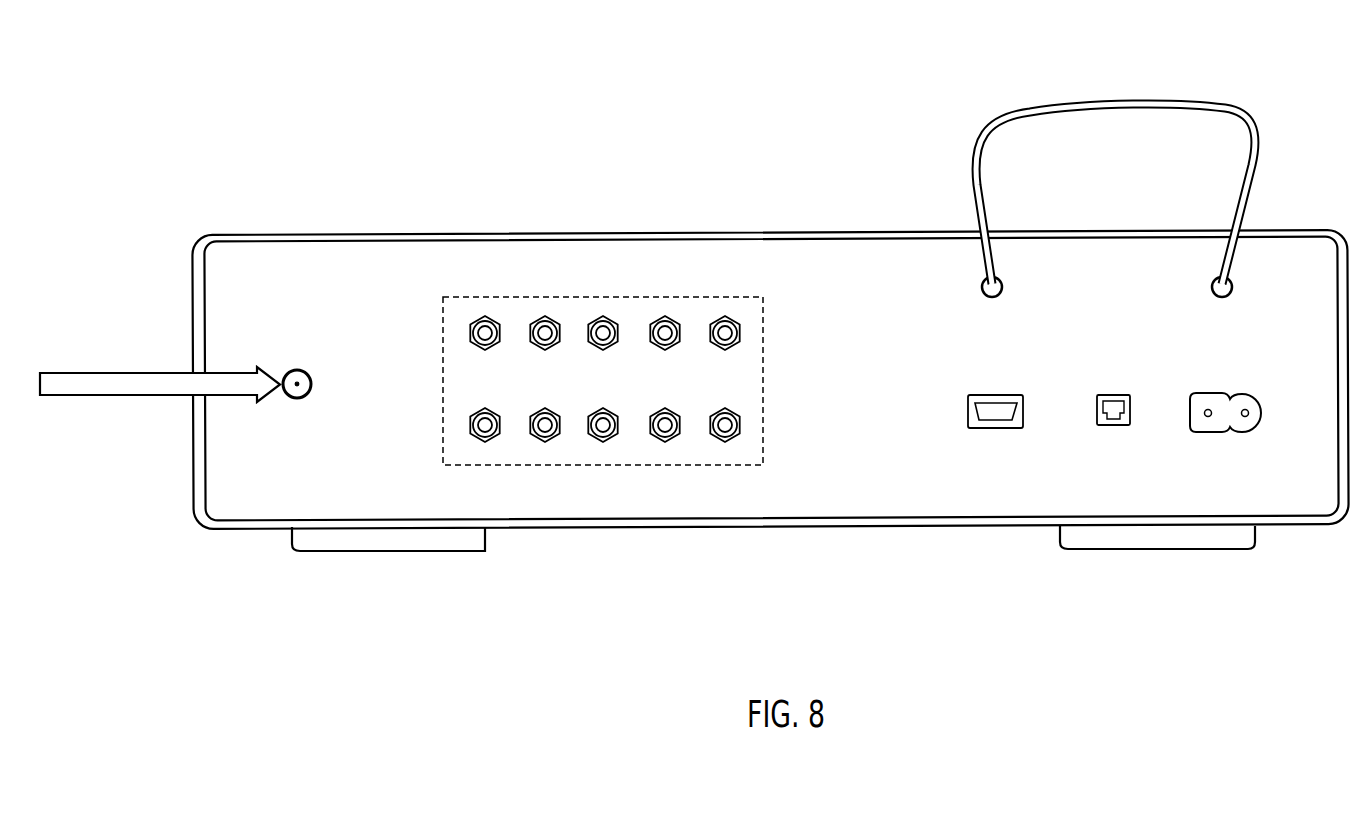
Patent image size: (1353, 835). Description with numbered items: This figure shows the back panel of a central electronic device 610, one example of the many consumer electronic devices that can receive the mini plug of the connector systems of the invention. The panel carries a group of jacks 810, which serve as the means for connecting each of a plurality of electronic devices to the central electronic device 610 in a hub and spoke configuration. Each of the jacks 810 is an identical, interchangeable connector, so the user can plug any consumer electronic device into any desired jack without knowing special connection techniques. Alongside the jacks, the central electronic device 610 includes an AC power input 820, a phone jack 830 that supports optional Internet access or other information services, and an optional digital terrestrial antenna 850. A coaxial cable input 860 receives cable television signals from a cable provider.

The central electronic device 610 is at (805, 106).
The jacks 810 is at (725, 316).
The AC power input 820 is at (1215, 432).
The phone jack 830 is at (1118, 425).
The digital terrestrial antenna 850 is at (1105, 102).
The coaxial cable input 860 is at (295, 397).